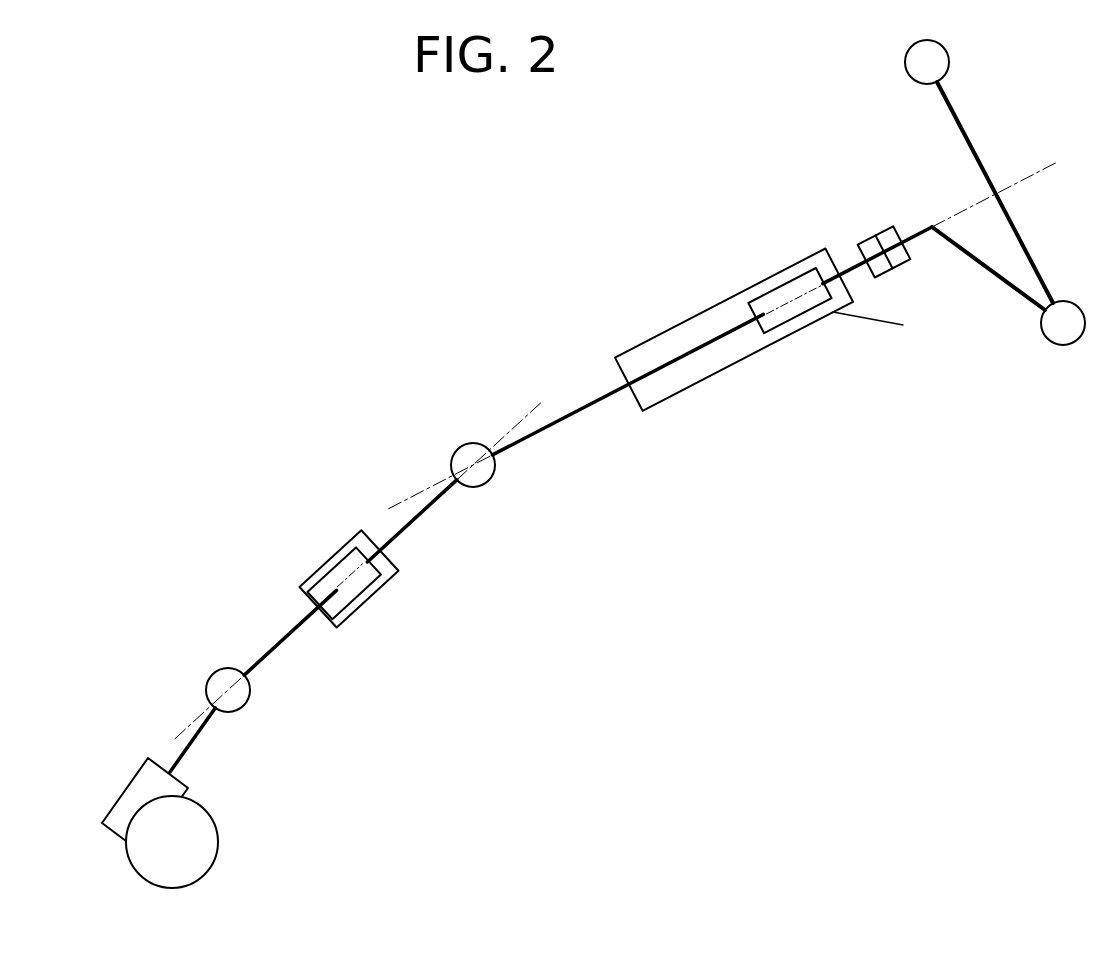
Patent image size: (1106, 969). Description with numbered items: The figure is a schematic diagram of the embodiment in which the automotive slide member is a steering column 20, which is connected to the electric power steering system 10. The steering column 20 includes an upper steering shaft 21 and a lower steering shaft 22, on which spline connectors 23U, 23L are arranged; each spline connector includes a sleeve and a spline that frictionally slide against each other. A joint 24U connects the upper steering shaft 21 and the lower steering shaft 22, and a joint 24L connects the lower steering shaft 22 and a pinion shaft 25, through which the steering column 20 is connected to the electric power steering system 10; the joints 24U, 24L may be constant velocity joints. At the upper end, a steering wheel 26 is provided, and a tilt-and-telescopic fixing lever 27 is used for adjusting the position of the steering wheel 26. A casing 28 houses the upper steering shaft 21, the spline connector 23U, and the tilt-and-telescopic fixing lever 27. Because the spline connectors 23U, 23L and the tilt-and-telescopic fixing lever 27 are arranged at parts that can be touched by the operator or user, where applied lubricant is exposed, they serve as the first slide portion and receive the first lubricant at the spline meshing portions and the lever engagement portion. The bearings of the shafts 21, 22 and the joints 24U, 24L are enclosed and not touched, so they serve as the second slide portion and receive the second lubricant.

The electric power steering system 10 is at (252, 862).
The steering column 20 is at (695, 283).
The upper steering shaft 21 is at (557, 427).
The lower steering shaft 22 is at (413, 523).
The spline connector 23U is at (805, 316).
The spline connector 23L is at (360, 607).
The joint 24U is at (468, 443).
The joint 24L is at (222, 668).
The pinion shaft 25 is at (193, 748).
The steering wheel 26 is at (905, 59).
The tilt-and-telescopic fixing lever 27 is at (875, 322).
The casing 28 is at (648, 338).